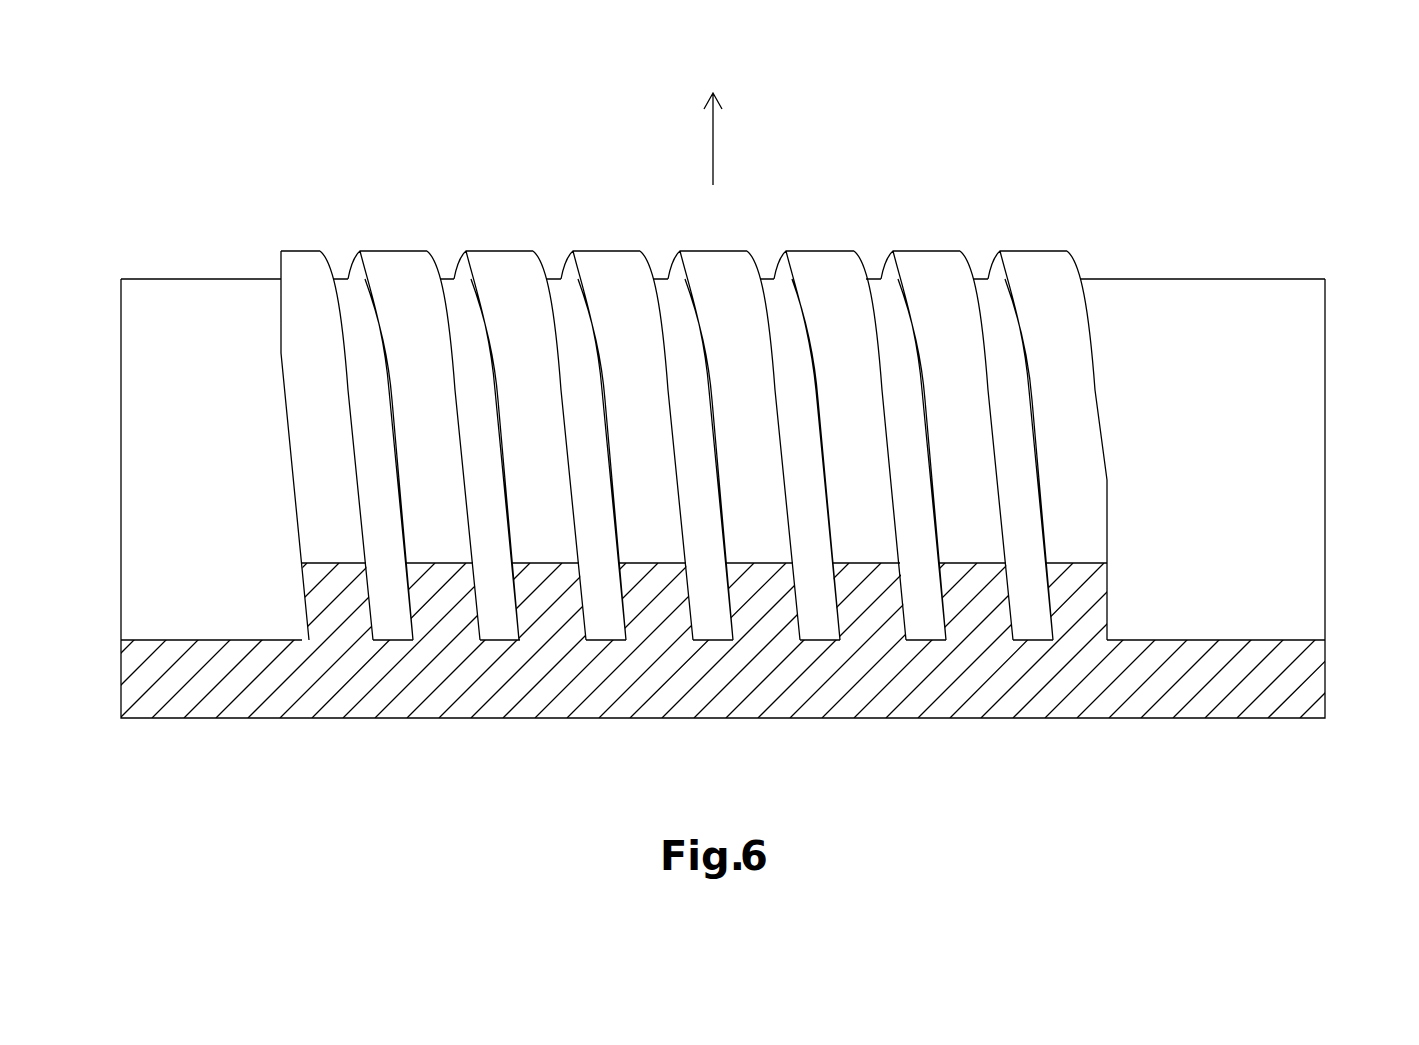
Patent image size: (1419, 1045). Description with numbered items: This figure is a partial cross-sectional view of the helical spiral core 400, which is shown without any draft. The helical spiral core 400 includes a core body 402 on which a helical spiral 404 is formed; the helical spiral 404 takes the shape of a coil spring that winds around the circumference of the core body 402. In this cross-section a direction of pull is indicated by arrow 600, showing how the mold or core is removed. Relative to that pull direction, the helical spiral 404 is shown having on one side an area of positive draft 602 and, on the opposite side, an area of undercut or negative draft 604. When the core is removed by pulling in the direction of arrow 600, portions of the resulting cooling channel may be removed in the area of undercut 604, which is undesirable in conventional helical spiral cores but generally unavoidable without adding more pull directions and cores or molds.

The helical spiral core 400 is at (721, 415).
The core body 402 is at (1262, 458).
The helical spiral 404 is at (1037, 268).
The arrow 600 is at (713, 140).
The area of positive draft 602 is at (1008, 588).
The area of undercut or negative draft 604 is at (1047, 612).